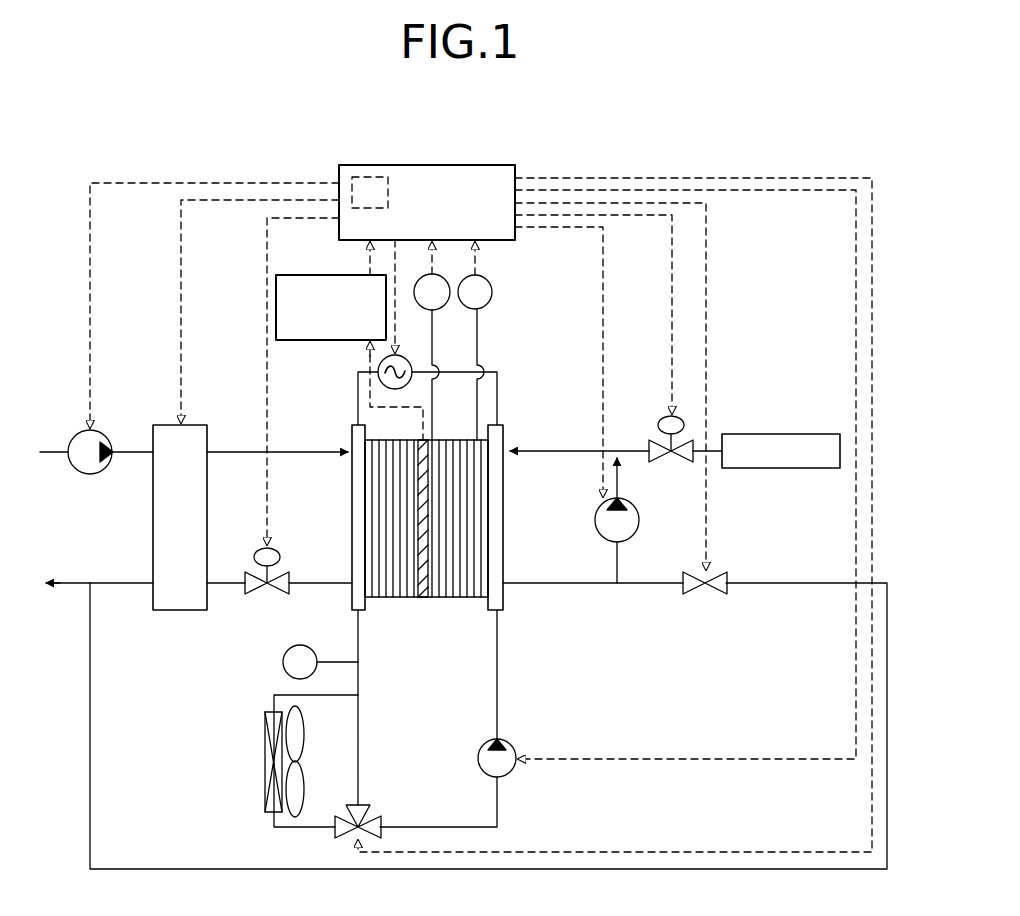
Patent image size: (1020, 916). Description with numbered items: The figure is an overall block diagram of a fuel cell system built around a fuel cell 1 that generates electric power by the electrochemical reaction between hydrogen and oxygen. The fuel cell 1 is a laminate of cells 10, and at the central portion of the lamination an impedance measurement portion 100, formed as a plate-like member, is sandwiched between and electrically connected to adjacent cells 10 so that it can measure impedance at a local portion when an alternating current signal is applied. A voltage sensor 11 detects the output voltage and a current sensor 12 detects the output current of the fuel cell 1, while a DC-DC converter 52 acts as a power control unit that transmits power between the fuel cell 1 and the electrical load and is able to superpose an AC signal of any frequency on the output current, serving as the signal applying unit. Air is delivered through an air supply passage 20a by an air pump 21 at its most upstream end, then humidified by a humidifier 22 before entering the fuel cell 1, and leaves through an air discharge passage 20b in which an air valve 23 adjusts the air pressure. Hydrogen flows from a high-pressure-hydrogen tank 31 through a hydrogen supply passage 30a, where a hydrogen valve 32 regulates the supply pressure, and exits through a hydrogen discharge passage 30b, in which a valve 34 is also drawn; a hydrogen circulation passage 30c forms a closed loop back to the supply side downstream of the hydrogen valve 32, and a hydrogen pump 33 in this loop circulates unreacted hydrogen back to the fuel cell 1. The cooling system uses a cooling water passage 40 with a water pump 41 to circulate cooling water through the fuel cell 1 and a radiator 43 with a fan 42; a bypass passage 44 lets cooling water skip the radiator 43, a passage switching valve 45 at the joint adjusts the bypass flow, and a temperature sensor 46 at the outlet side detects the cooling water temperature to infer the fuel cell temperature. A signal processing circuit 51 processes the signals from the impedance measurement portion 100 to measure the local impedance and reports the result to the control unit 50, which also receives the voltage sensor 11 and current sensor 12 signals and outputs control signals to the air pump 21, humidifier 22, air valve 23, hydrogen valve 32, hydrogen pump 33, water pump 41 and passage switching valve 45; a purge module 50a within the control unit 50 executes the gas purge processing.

The fuel cell 1 is at (425, 606).
The cell 10 is at (427, 552).
The impedance measurement portion 100 is at (388, 600).
The voltage sensor 11 is at (443, 308).
The current sensor 12 is at (493, 292).
The air supply passage 20a is at (232, 448).
The air discharge passage 20b is at (228, 586).
The air pump 21 is at (90, 475).
The humidifier 22 is at (172, 612).
The air valve 23 is at (272, 596).
The hydrogen supply passage 30a is at (716, 446).
The hydrogen discharge passage 30b is at (650, 588).
The hydrogen circulation passage 30c is at (615, 562).
The high-pressure-hydrogen tank 31 is at (808, 432).
The hydrogen valve 32 is at (668, 466).
The hydrogen pump 33 is at (640, 520).
The purge valve 34 is at (712, 596).
The cooling water passage 40 is at (500, 662).
The water pump 41 is at (510, 745).
The fan 42 is at (305, 745).
The radiator 43 is at (265, 762).
The bypass passage 44 is at (360, 708).
The passage switching valve 45 is at (378, 822).
The temperature sensor 46 is at (312, 645).
The control unit 50 is at (478, 165).
The purge module 50a is at (358, 176).
The signal processing circuit 51 is at (322, 275).
The DC-DC converter 52 is at (402, 356).